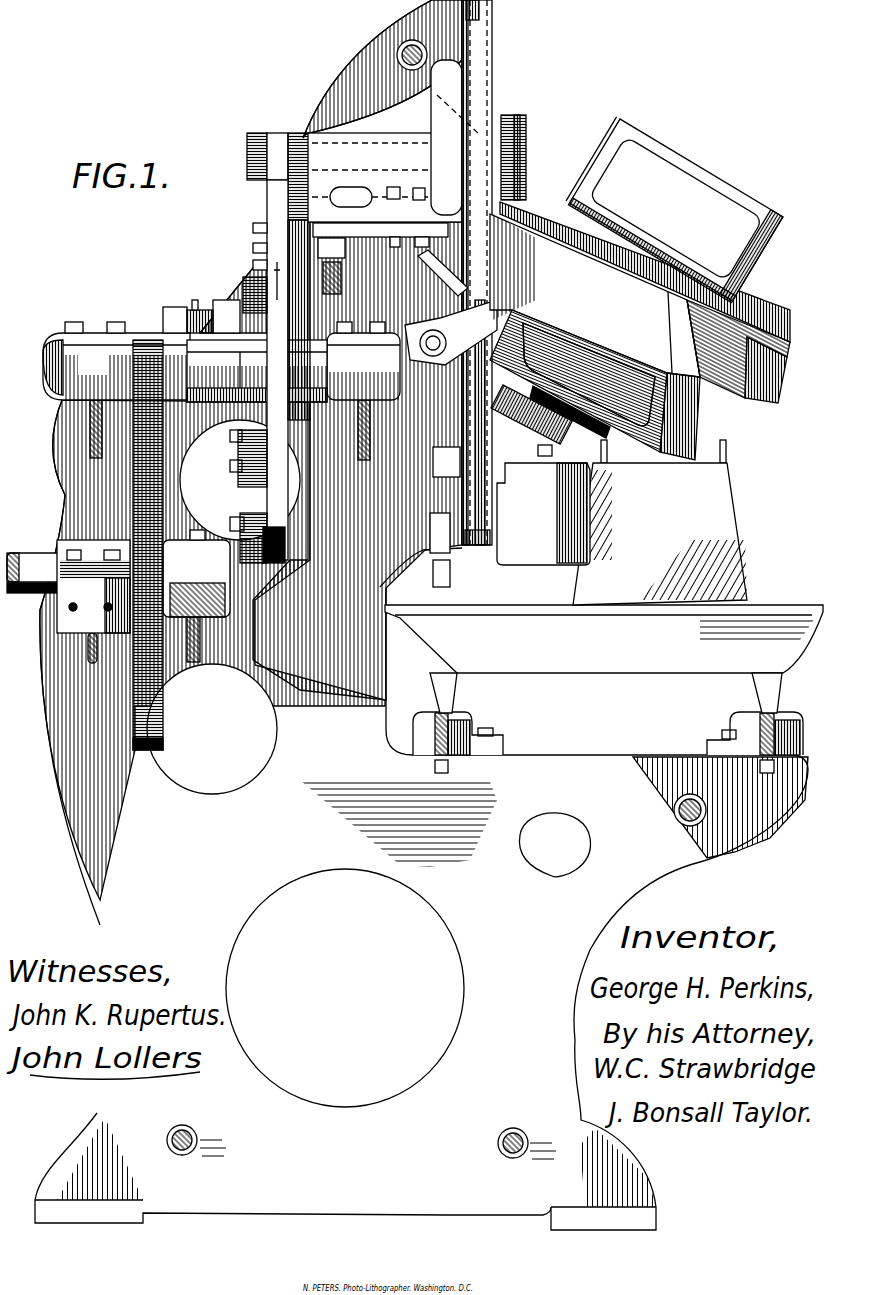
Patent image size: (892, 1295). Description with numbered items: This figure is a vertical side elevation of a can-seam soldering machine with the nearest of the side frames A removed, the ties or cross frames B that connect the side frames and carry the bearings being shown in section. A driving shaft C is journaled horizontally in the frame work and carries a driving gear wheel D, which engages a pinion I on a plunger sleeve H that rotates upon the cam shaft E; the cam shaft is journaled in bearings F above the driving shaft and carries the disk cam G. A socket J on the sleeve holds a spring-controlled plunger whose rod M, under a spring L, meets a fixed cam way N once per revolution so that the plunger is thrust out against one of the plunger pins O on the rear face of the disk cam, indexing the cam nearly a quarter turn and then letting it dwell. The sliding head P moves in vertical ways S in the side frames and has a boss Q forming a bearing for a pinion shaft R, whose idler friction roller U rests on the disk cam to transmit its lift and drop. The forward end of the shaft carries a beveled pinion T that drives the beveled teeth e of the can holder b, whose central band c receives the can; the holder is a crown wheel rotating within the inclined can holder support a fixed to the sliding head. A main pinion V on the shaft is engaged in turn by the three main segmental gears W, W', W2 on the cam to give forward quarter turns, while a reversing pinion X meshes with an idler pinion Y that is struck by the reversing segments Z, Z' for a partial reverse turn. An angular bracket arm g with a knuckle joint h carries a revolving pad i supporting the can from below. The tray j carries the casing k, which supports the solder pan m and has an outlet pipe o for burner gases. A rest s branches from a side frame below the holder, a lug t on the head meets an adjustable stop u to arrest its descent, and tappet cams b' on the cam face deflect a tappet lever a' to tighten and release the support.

The side frames A is at (421, 615).
The ties or cross frames B is at (412, 52).
The driving or motor shaft C is at (118, 581).
The driving gear wheel D is at (133, 472).
The cam shaft E is at (400, 395).
The bearings F is at (221, 361).
The disk cam G is at (267, 200).
The plunger sleeve H is at (257, 371).
The pinion I is at (145, 375).
The socket J is at (226, 316).
The spring L is at (195, 305).
The plunger rod M is at (195, 312).
The fixed cam way N is at (163, 312).
The plunger pins O is at (262, 420).
The sliding head P is at (492, 95).
The boss Q is at (385, 177).
The pinion shaft R is at (431, 140).
The vertical ways S is at (480, 12).
The beveled pinion T is at (526, 152).
The idler friction roller U is at (277, 146).
The main pinion V is at (256, 146).
The segmental gear W is at (242, 277).
The segmental gear W2 is at (245, 487).
The segmental gear W' is at (262, 550).
The reversing pinion X is at (299, 166).
The idler pinion Y is at (343, 197).
The reversing segment Z is at (380, 217).
The reversing segment Z' is at (299, 320).
The can holder support a is at (640, 337).
The tappet lever a' is at (332, 259).
The can holder b is at (766, 360).
The tappet cams b' is at (335, 281).
The central band c is at (674, 210).
The beveled teeth e is at (645, 264).
The angular bracket arm g is at (508, 407).
The knuckle joint h is at (449, 313).
The revolving pad i is at (596, 455).
The tray j is at (604, 659).
The casing k is at (660, 551).
The pan m is at (663, 451).
The outlet pipe o is at (536, 516).
The rest s is at (519, 412).
The lug t is at (446, 462).
The adjustable stop u is at (440, 550).